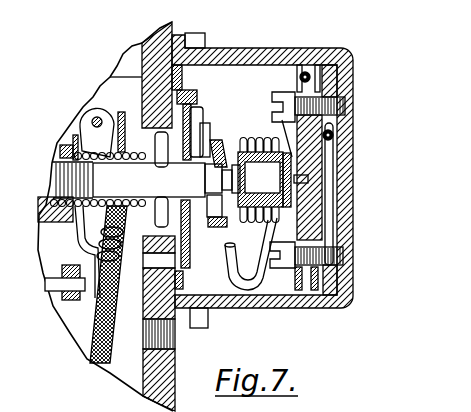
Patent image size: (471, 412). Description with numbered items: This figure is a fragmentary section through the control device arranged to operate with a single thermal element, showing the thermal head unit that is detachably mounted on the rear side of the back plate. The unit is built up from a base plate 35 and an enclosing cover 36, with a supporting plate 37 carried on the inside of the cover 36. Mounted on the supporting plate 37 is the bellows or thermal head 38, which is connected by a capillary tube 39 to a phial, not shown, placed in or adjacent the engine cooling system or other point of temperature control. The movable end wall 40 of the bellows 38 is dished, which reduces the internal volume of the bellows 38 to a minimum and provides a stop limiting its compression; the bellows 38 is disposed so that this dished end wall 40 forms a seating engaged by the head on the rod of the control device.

The base plate 35 is at (193, 78).
The enclosing cover 36 is at (339, 80).
The supporting plate 37 is at (324, 175).
The bellows 38 is at (345, 245).
The capillary tube 39 is at (265, 277).
The movable end wall 40 is at (300, 156).